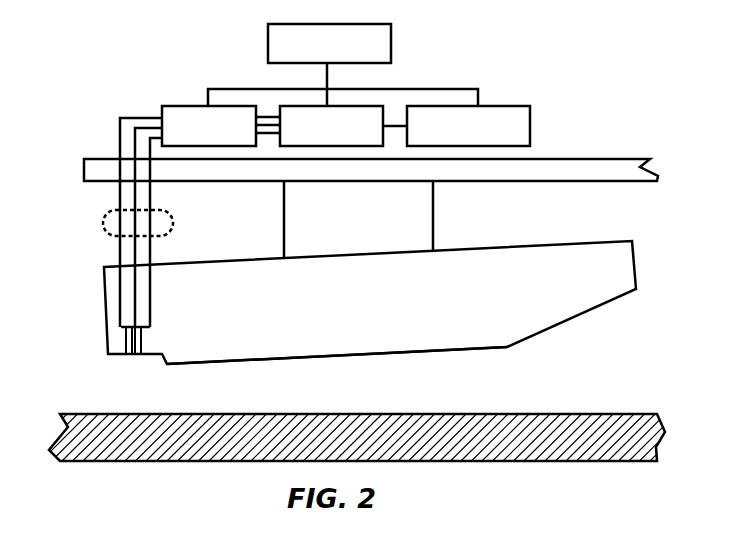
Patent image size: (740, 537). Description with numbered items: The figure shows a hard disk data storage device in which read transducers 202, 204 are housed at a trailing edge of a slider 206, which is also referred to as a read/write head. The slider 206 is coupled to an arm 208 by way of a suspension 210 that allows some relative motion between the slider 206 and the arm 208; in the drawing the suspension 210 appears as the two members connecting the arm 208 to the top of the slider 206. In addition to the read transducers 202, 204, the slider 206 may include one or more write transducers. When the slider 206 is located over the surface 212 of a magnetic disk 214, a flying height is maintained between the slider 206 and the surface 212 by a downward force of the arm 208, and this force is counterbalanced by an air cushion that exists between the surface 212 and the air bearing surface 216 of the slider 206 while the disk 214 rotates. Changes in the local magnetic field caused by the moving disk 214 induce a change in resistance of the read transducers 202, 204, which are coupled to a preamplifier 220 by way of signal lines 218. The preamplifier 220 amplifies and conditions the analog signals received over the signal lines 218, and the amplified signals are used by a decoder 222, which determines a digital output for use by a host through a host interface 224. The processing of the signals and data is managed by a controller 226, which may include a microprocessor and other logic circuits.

The read transducer 202 is at (130, 355).
The read transducer 204 is at (140, 355).
The slider 206 is at (543, 250).
The arm 208 is at (588, 163).
The suspension 210 is at (433, 213).
The surface 212 is at (547, 414).
The magnetic disk 214 is at (522, 450).
The air bearing surface 216 is at (390, 350).
The signal lines 218 is at (112, 210).
The preamplifier 220 is at (175, 106).
The decoder 222 is at (303, 106).
The host interface 224 is at (497, 106).
The controller 226 is at (268, 53).